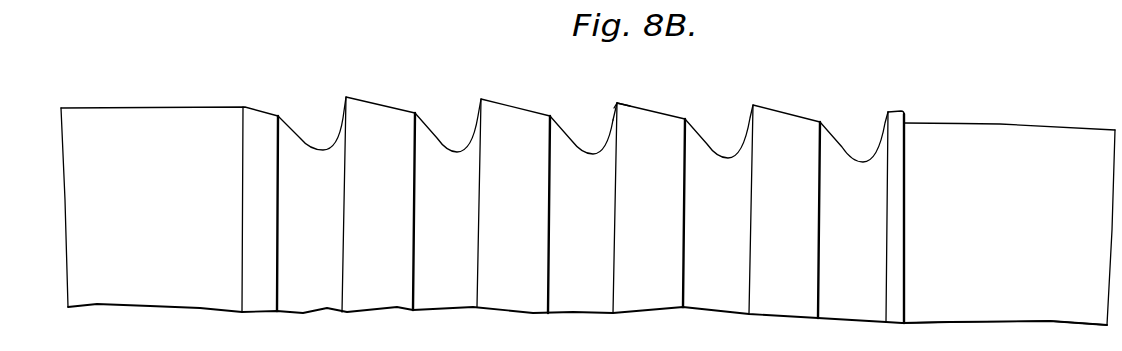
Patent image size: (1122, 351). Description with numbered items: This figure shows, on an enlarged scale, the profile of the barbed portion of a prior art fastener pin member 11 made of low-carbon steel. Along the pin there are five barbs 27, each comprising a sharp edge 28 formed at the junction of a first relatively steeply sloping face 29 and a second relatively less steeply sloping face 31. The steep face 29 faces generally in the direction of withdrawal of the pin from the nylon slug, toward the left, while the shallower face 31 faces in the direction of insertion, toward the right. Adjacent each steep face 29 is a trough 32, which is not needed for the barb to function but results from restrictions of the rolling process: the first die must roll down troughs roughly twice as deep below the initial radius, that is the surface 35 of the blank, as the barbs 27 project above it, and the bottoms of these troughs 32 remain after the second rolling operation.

The pin member 11 is at (1033, 142).
The barbs 27 is at (383, 107).
The sharp edge 28 is at (614, 102).
The first relatively steeply sloping face 29 is at (612, 122).
The second relatively less steeply sloping face 31 is at (651, 107).
The trough 32 is at (590, 143).
The surface of the blank 35 is at (952, 126).